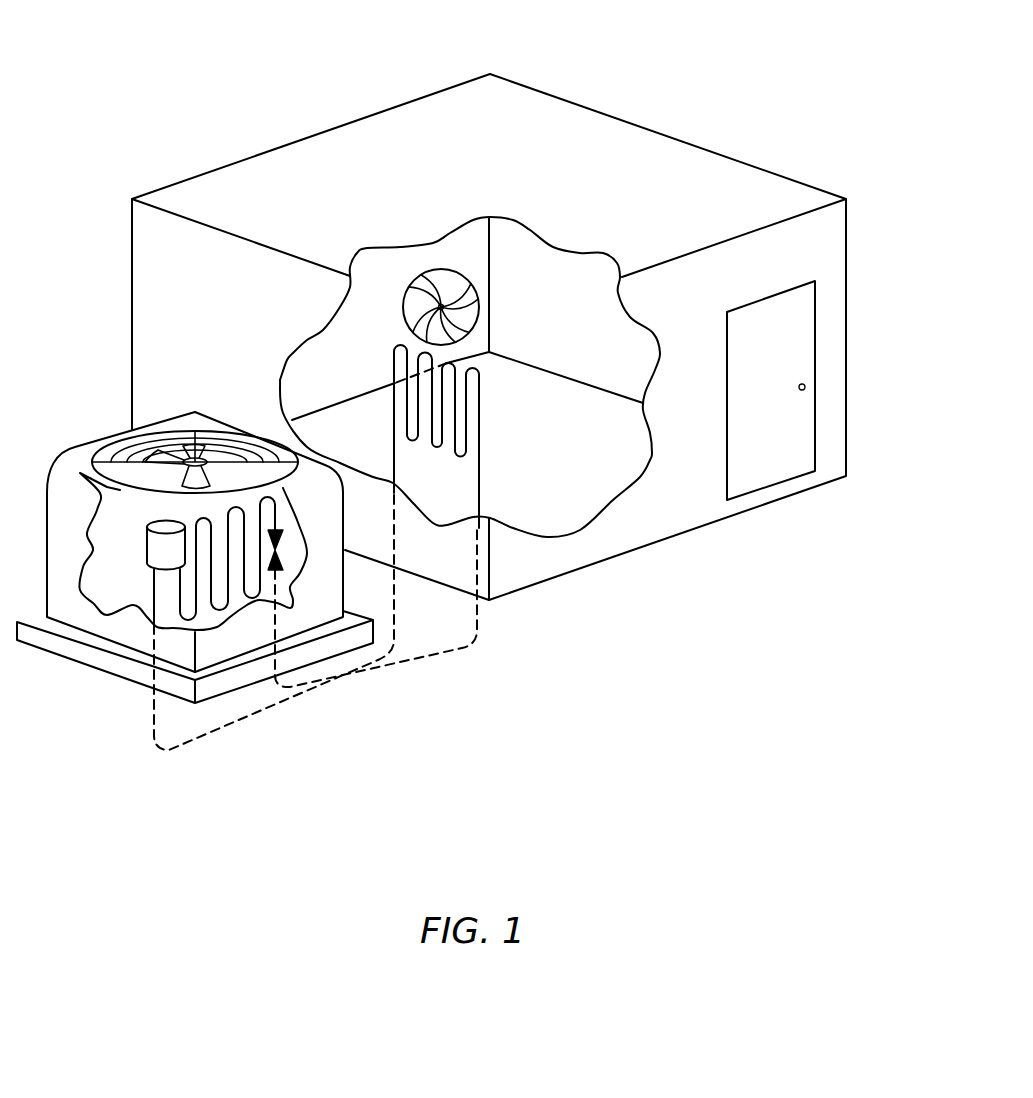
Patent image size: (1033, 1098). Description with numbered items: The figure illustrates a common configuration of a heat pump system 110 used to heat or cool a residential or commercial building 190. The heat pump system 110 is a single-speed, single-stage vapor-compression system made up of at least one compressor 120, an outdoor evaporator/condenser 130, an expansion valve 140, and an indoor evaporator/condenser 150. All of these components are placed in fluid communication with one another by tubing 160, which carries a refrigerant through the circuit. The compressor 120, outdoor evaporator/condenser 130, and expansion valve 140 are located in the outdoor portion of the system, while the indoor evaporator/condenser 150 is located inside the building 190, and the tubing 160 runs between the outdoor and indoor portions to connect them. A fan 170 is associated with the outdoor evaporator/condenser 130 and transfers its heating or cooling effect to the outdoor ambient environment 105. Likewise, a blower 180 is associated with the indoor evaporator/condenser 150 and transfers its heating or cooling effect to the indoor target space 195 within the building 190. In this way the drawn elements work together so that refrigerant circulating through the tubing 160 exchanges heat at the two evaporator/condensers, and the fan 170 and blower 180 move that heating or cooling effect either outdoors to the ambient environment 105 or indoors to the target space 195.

The outdoor ambient environment 105 is at (625, 614).
The heat pump system 110 is at (143, 104).
The compressor 120 is at (145, 545).
The outdoor evaporator/condenser 130 is at (222, 608).
The expansion valve 140 is at (283, 568).
The indoor evaporator/condenser 150 is at (455, 415).
The tubing 160 is at (427, 665).
The fan 170 is at (168, 432).
The blower 180 is at (440, 267).
The building 190 is at (647, 163).
The indoor target space 195 is at (467, 319).